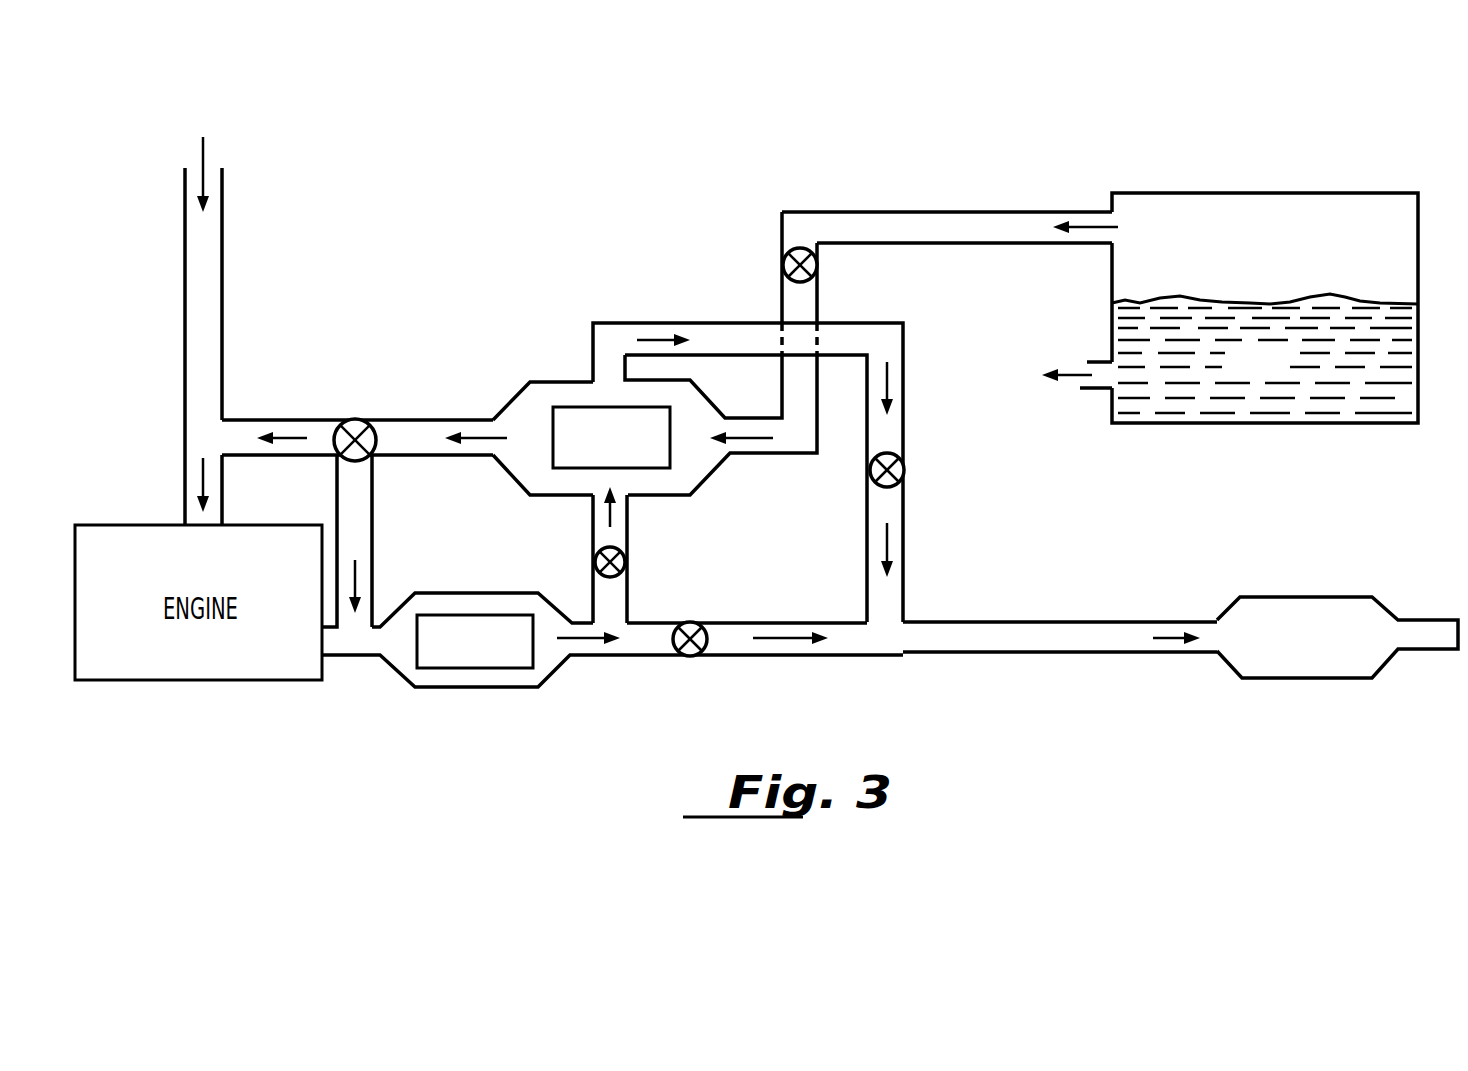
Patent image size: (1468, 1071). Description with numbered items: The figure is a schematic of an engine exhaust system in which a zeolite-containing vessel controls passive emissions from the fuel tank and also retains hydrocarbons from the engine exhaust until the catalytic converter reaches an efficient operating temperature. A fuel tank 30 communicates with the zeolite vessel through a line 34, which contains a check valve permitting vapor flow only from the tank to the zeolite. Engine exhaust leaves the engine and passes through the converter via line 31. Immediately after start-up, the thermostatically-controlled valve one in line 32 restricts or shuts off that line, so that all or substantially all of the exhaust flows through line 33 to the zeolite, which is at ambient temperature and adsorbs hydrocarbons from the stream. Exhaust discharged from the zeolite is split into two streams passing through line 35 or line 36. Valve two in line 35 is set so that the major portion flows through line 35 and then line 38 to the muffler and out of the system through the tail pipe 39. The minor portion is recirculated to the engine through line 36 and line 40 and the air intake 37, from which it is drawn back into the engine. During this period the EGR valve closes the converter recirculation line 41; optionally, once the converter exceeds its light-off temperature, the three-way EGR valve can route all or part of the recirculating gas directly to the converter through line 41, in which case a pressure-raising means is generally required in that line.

The fuel tank 30 is at (1335, 190).
The line 31 is at (378, 643).
The line 32 is at (822, 647).
The line 33 is at (628, 518).
The line 34 is at (958, 216).
The line 35 is at (657, 328).
The line 36 is at (427, 427).
The air intake 37 is at (222, 300).
The line 38 is at (1048, 638).
The tail pipe 39 is at (1435, 642).
The line 40 is at (310, 430).
The converter recirculation line 41 is at (357, 523).